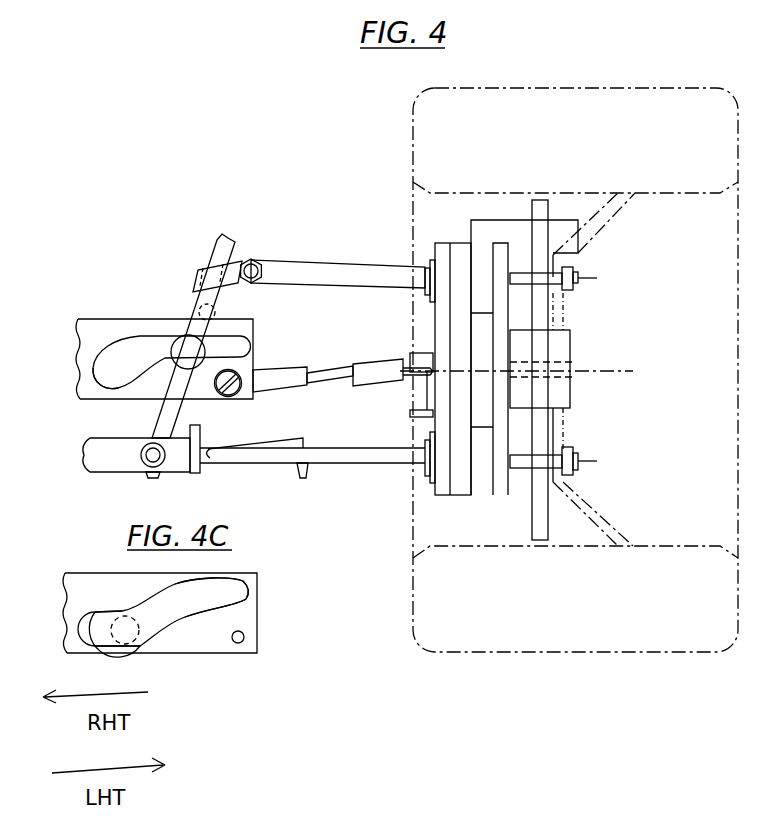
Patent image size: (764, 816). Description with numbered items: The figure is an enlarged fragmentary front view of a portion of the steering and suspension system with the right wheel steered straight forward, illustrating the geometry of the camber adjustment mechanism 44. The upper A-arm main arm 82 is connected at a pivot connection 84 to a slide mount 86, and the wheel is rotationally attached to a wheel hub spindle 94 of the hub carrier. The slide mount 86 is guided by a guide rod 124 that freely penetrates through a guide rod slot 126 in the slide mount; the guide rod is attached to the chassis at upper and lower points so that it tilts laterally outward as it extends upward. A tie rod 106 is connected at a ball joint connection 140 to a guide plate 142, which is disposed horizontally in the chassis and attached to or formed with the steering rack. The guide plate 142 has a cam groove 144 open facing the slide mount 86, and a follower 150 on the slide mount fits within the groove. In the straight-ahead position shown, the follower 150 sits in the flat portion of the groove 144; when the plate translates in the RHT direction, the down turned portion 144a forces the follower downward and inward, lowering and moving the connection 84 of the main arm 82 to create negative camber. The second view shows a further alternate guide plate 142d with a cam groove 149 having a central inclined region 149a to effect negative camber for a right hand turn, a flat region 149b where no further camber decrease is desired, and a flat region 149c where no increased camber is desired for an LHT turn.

In FIG. 4, the camber adjustment mechanism 44 is at (158, 218).
In FIG. 4, the main arm 82 is at (328, 263).
In FIG. 4, the pivot connection 84 is at (252, 260).
In FIG. 4, the slide mount 86 is at (197, 274).
In FIG. 4, the wheel hub spindle 94 is at (553, 362).
In FIG. 4, the tie rod 106 is at (298, 390).
In FIG. 4, the guide rod 124 is at (152, 424).
In FIG. 4, the guide rod slot 126 is at (216, 316).
In FIG. 4, the ball joint connection 140 is at (228, 397).
In FIG. 4C, the ball joint connection 140 is at (247, 636).
In FIG. 4, the guide plate 142 is at (80, 394).
In FIG. 4C, the alternate guide plate 142d is at (92, 572).
In FIG. 4, the cam groove 144 is at (142, 342).
In FIG. 4, the down turned portion 144a is at (125, 379).
In FIG. 4C, the cam groove 149 is at (172, 630).
In FIG. 4C, the central inclined region 149a is at (227, 597).
In FIG. 4C, the flat region 149b is at (105, 637).
In FIG. 4C, the flat region 149c is at (237, 600).
In FIG. 4, the follower 150 is at (240, 370).
In FIG. 4C, the follower 150 is at (123, 645).